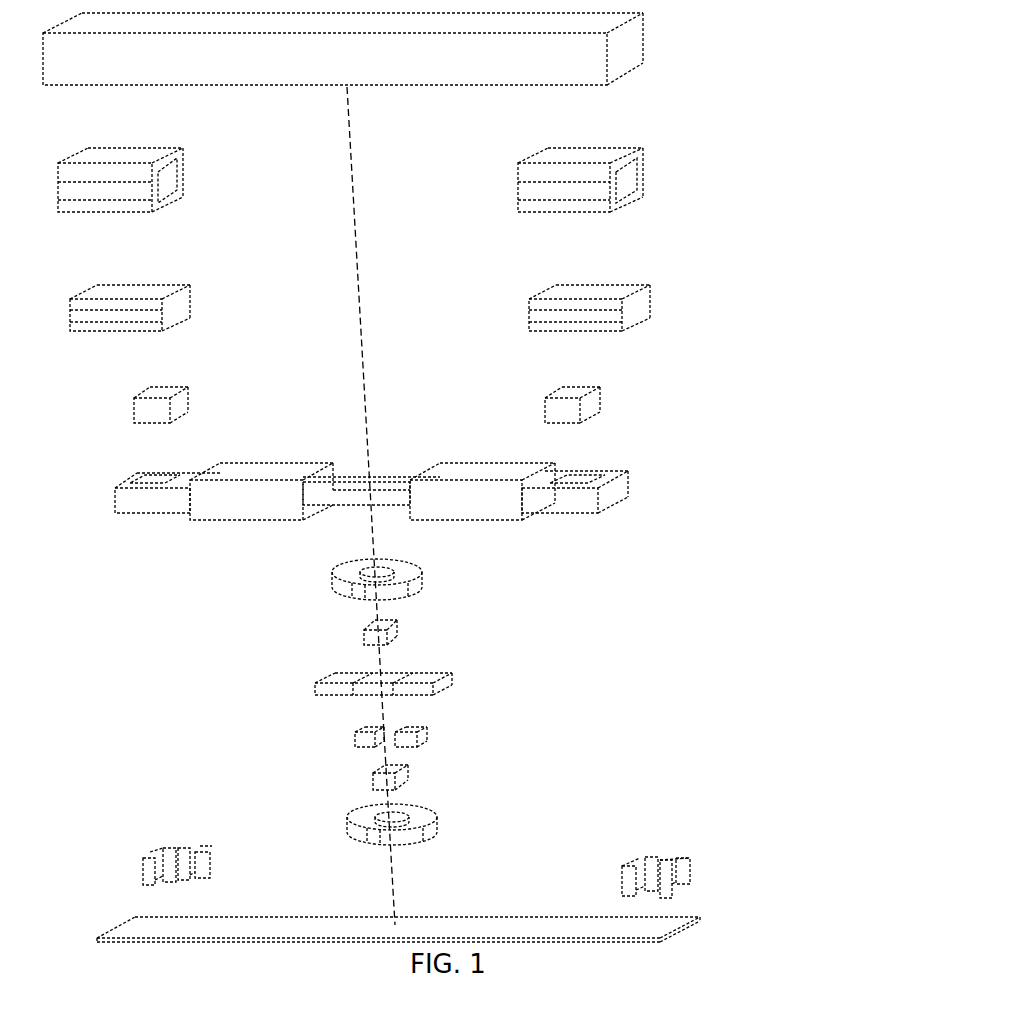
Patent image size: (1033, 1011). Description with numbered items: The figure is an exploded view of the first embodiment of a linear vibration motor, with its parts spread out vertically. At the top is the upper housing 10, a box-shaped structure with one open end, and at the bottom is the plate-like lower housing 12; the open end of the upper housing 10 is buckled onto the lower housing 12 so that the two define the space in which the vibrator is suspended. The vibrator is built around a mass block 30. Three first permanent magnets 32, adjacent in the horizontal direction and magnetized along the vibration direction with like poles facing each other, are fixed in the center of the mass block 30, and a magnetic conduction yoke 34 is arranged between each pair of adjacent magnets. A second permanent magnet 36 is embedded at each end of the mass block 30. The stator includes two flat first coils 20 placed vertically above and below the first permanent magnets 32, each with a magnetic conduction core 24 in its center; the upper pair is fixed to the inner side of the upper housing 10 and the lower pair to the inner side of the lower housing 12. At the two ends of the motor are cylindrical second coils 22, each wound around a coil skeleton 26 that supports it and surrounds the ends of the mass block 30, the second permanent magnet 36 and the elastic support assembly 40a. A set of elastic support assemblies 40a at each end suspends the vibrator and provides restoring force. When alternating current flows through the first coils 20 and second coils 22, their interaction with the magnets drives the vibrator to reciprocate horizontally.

The upper housing 10 is at (640, 47).
The lower housing 12 is at (688, 926).
The first coil 20 is at (420, 577).
The second coil 22 is at (638, 175).
The magnetic conduction core 24 is at (395, 630).
The coil skeleton 26 is at (638, 302).
The mass block 30 is at (625, 488).
The first permanent magnet 32 is at (450, 685).
The magnetic conduction yoke 34 is at (418, 735).
The second permanent magnet 36 is at (590, 405).
The elastic support assembly 40a is at (413, 843).